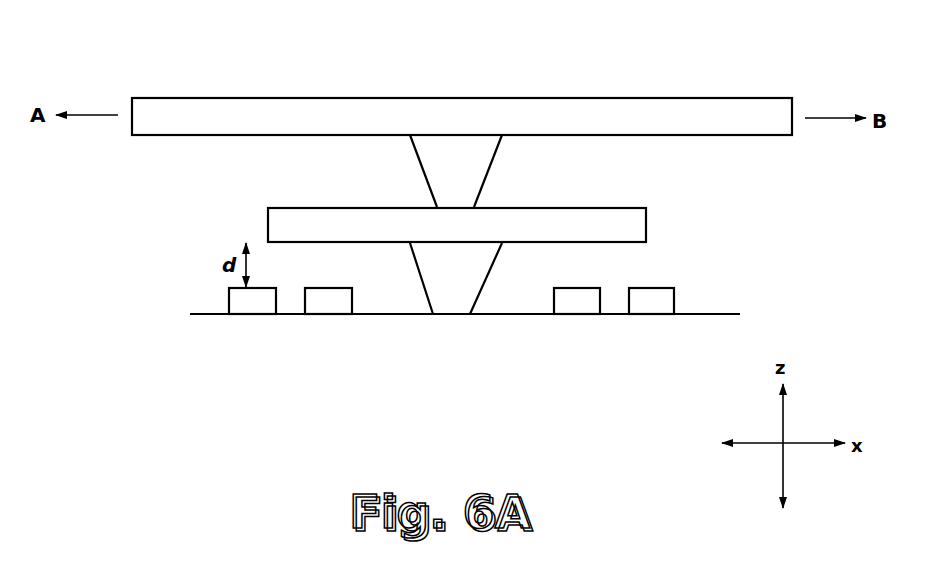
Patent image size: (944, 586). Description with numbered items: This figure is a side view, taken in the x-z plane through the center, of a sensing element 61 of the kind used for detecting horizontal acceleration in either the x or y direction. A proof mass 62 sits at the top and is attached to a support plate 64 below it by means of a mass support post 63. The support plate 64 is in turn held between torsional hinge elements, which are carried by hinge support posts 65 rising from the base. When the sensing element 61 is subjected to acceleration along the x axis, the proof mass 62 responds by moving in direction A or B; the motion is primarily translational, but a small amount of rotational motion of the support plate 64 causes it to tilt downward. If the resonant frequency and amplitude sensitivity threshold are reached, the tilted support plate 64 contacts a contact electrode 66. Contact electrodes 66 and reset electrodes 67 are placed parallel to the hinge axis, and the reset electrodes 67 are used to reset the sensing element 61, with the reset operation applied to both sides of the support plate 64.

The sensing element 61 is at (507, 80).
The proof mass 62 is at (677, 108).
The mass support post 63 is at (473, 172).
The support plate 64 is at (636, 232).
The hinge support post 65 is at (473, 278).
The contact electrode 66 is at (258, 290).
The reset electrode 67 is at (330, 290).